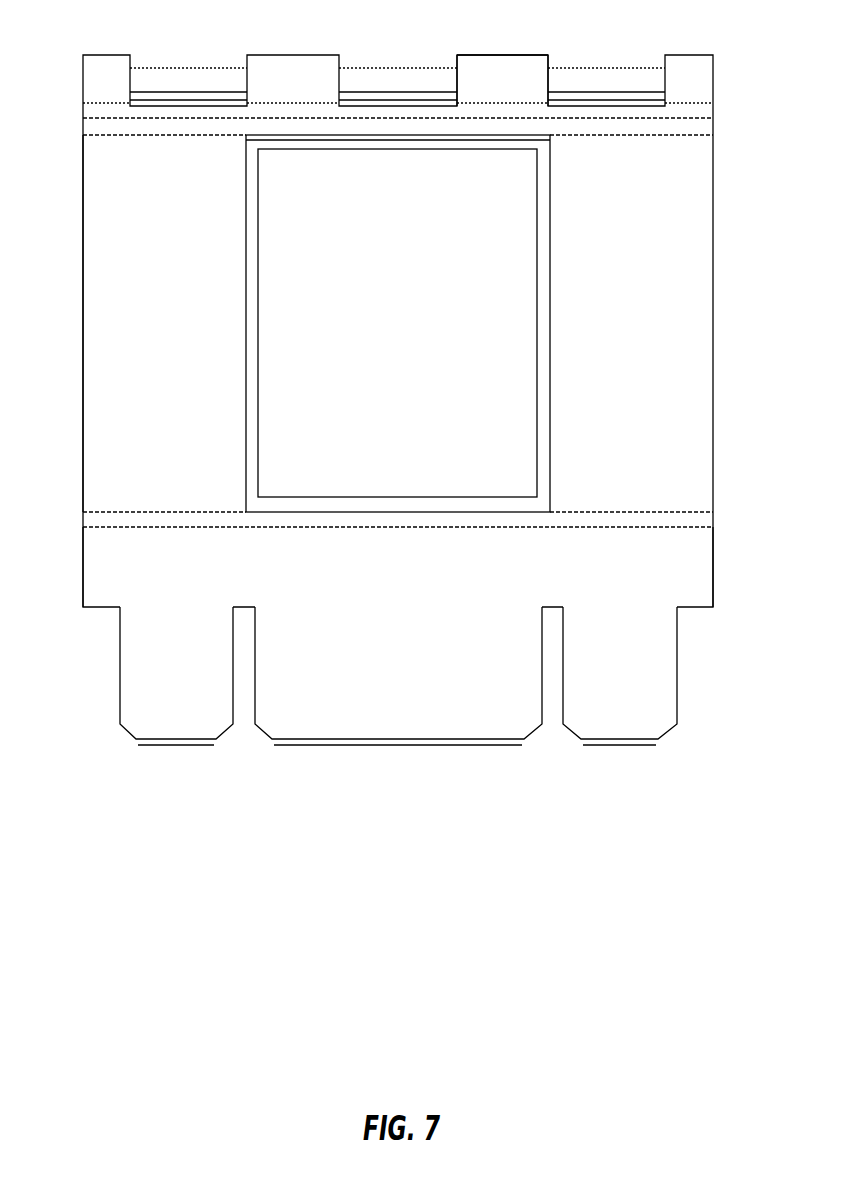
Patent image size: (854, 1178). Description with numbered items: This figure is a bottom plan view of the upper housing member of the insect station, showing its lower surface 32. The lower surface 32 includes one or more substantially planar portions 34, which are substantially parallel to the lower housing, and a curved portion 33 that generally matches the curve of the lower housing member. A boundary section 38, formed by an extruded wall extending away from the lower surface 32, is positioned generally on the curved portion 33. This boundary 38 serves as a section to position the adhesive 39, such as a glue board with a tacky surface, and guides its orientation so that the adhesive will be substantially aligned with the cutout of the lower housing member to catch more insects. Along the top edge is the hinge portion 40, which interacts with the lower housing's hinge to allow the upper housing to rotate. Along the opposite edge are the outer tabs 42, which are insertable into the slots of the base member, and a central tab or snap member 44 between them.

The lower surface 32 is at (112, 226).
The curved portion 33 is at (82, 320).
The substantially planar portions 34 is at (82, 573).
The boundary section 38 is at (373, 495).
The adhesive 39 is at (419, 337).
The hinge portion 40 is at (499, 66).
The tabs 42 is at (643, 673).
The central tab or snap member 44 is at (377, 704).